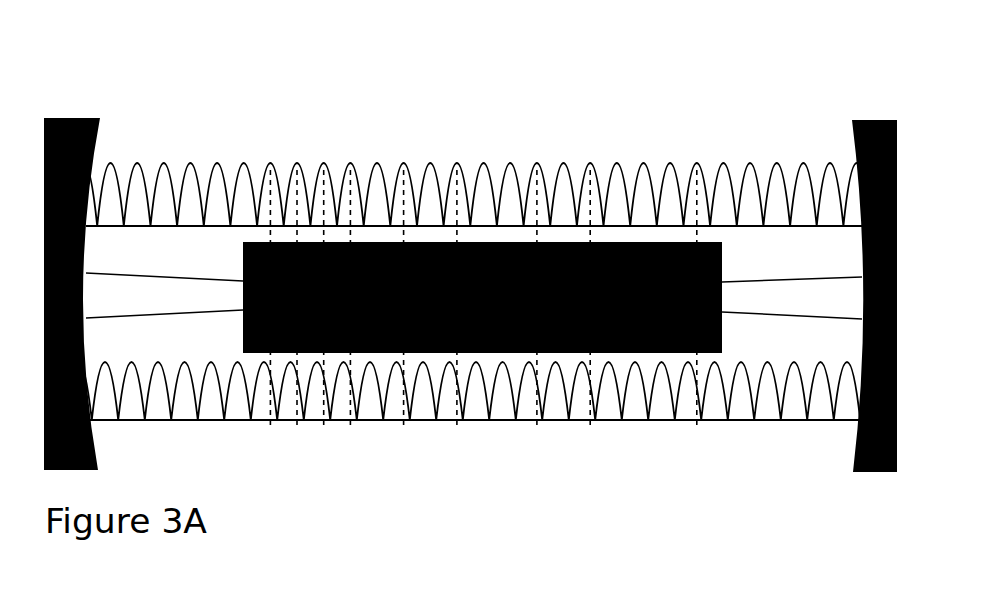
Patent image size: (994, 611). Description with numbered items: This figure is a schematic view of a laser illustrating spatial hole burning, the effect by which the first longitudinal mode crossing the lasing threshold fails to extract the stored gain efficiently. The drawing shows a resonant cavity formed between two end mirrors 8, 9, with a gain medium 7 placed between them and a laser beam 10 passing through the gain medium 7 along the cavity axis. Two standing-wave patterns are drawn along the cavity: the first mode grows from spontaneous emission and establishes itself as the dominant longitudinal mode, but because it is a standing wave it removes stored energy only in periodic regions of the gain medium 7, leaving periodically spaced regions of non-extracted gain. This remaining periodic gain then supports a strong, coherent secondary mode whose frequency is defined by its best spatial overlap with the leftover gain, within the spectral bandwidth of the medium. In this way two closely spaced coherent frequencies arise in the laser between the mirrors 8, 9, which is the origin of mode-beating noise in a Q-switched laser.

The gain medium 7 is at (236, 256).
The first cavity mirror 8 is at (67, 116).
The second cavity mirror 9 is at (872, 117).
The laser beam 10 is at (147, 285).